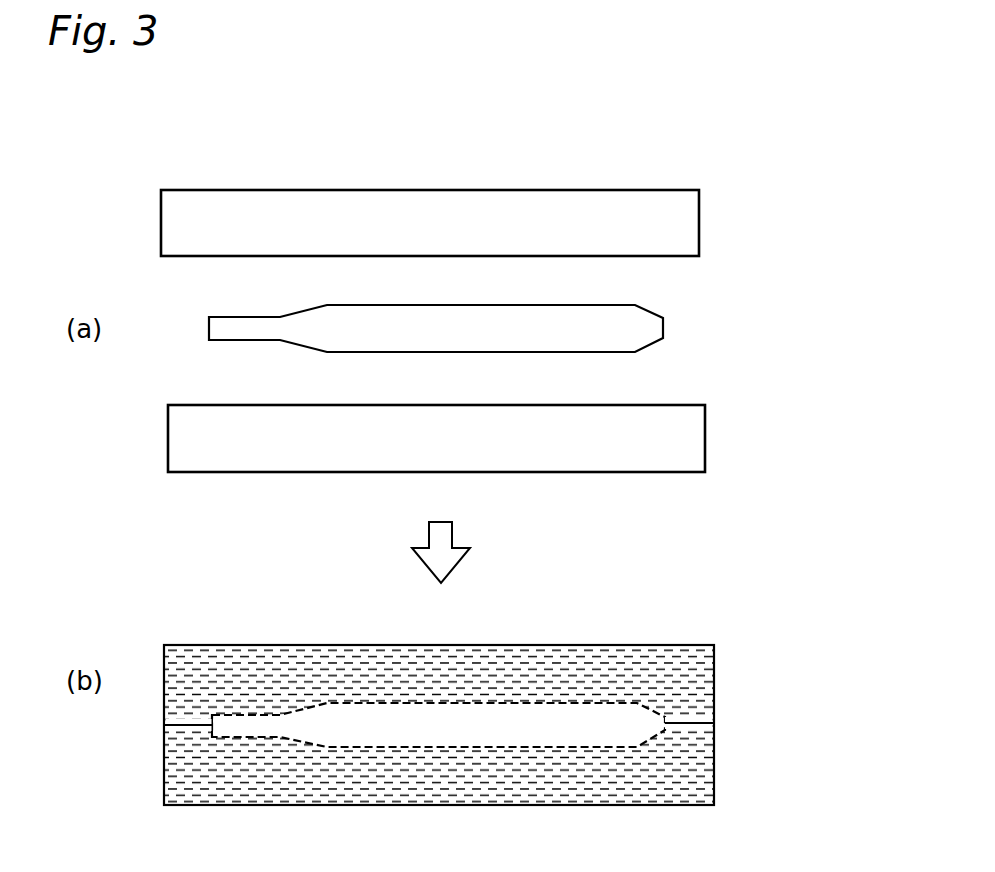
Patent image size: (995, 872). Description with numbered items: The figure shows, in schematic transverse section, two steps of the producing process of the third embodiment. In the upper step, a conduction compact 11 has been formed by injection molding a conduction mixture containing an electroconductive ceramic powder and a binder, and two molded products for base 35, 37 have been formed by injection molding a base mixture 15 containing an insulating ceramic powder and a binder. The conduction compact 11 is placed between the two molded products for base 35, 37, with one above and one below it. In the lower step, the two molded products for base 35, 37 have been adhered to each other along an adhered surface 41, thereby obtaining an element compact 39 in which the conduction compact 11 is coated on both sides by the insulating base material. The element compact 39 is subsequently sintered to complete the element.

The conduction compact 11 is at (643, 315).
The base mixture 15 is at (535, 660).
The molded product for base 35 is at (567, 190).
The molded product for base 37 is at (562, 472).
The element compact 39 is at (650, 645).
The adhered surface 41 is at (183, 725).